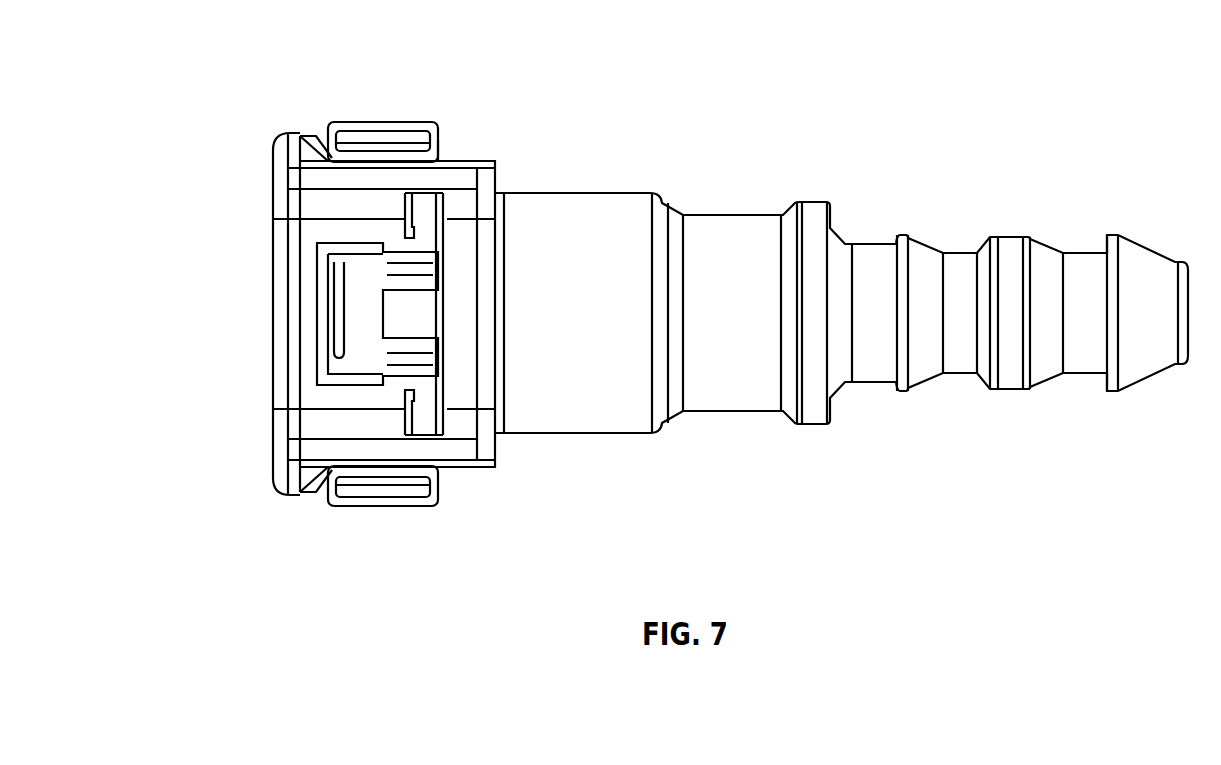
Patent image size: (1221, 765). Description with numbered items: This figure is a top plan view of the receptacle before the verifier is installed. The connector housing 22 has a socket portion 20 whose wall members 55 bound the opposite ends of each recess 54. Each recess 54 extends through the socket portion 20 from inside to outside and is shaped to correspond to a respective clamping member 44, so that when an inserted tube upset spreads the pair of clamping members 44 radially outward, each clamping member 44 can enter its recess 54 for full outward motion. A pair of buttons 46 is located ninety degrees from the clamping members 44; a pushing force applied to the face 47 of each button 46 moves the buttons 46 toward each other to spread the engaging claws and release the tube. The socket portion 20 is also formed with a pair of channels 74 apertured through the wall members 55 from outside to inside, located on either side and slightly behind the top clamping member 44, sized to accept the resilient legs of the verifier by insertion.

The socket portion 20 is at (266, 227).
The connector housing 22 is at (594, 190).
The clamping member 44 is at (350, 288).
The button 46 is at (438, 151).
The face 47 is at (358, 120).
The recess 54 is at (311, 310).
The wall member 55 is at (344, 202).
The channel 74 is at (428, 207).